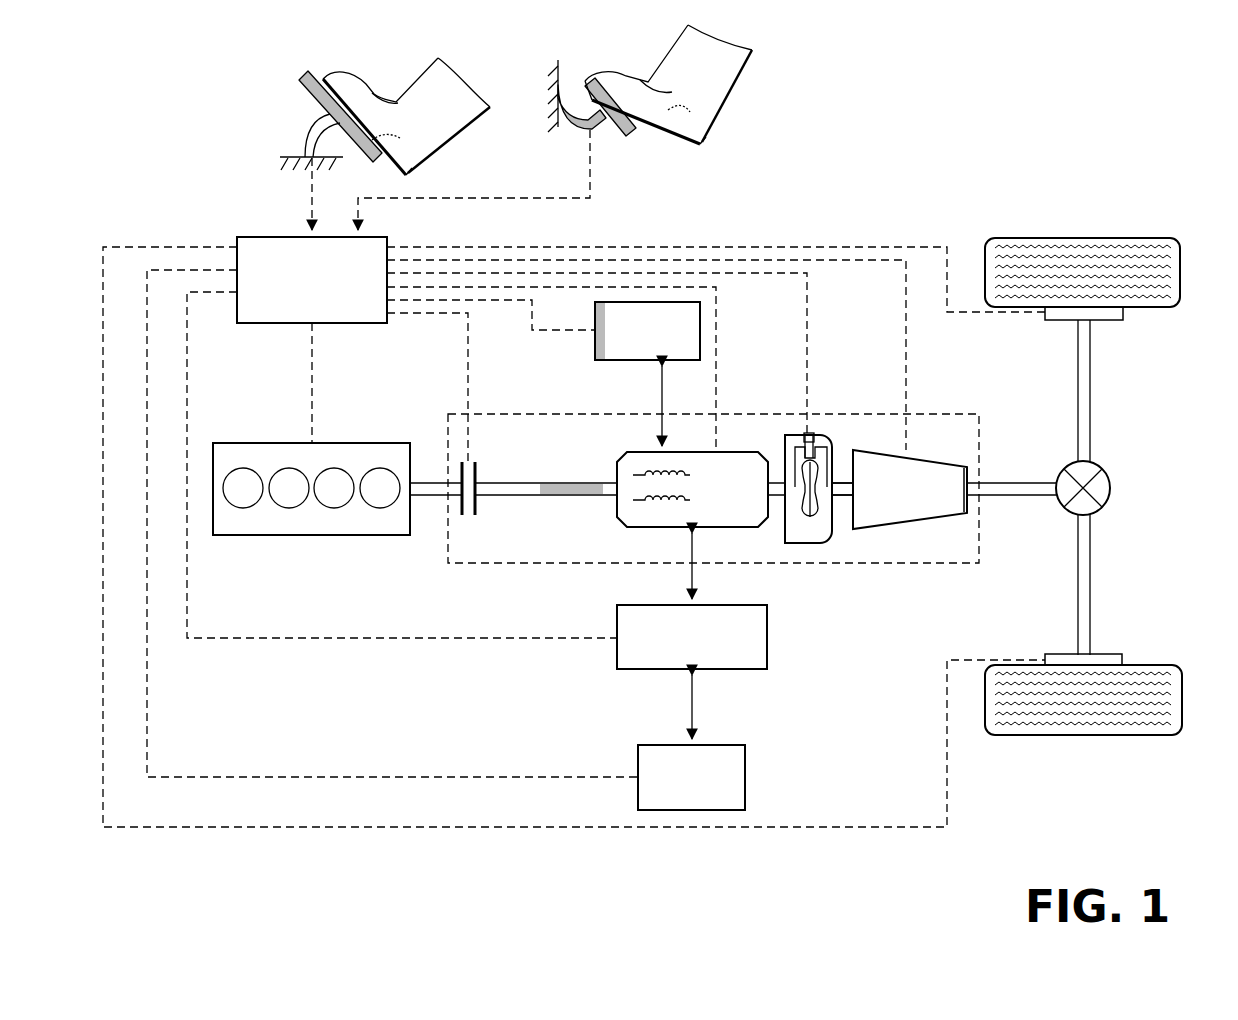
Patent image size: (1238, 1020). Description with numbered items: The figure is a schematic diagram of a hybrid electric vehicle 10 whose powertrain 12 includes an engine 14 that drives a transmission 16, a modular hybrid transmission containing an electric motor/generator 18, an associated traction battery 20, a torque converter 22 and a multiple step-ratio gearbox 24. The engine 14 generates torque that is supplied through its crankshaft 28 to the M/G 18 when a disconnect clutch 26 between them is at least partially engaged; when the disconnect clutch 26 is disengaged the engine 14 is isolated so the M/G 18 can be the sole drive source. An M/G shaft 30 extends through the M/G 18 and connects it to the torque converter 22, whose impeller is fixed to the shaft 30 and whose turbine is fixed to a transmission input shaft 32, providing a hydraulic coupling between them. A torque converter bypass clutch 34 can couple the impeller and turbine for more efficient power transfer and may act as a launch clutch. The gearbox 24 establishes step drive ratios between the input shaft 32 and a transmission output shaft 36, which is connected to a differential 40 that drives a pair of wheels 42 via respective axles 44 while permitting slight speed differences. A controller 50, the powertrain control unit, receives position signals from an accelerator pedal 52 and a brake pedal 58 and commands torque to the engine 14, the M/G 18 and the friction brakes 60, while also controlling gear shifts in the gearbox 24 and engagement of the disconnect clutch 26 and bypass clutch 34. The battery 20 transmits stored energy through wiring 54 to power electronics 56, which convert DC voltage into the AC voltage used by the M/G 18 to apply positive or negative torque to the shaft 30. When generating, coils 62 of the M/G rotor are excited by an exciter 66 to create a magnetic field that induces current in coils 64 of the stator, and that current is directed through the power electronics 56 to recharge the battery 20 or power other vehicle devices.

The hybrid electric vehicle 10 is at (845, 152).
The powertrain 12 is at (458, 663).
The engine 14 is at (263, 443).
The transmission 16 is at (772, 412).
The electric motor/generator (M/G) 18 is at (672, 528).
The traction battery 20 is at (745, 775).
The torque converter 22 is at (803, 544).
The gearbox 24 is at (910, 520).
The disconnect clutch 26 is at (478, 472).
The crankshaft 28 is at (442, 481).
The M/G shaft 30 is at (544, 480).
The transmission input shaft 32 is at (845, 476).
The torque converter bypass clutch 34 is at (811, 435).
The transmission output shaft 36 is at (1024, 482).
The differential 40 is at (1113, 492).
The wheels 42 is at (1085, 238).
The axles 44 is at (1092, 386).
The controller 50 is at (272, 236).
The accelerator pedal 52 is at (315, 108).
The wiring 54 is at (696, 715).
The power electronics 56 is at (767, 636).
The brake pedal 58 is at (630, 132).
The friction brakes 60 is at (1125, 313).
The rotor coils 62 is at (637, 473).
The stator coils 64 is at (633, 501).
The exciter 66 is at (594, 345).